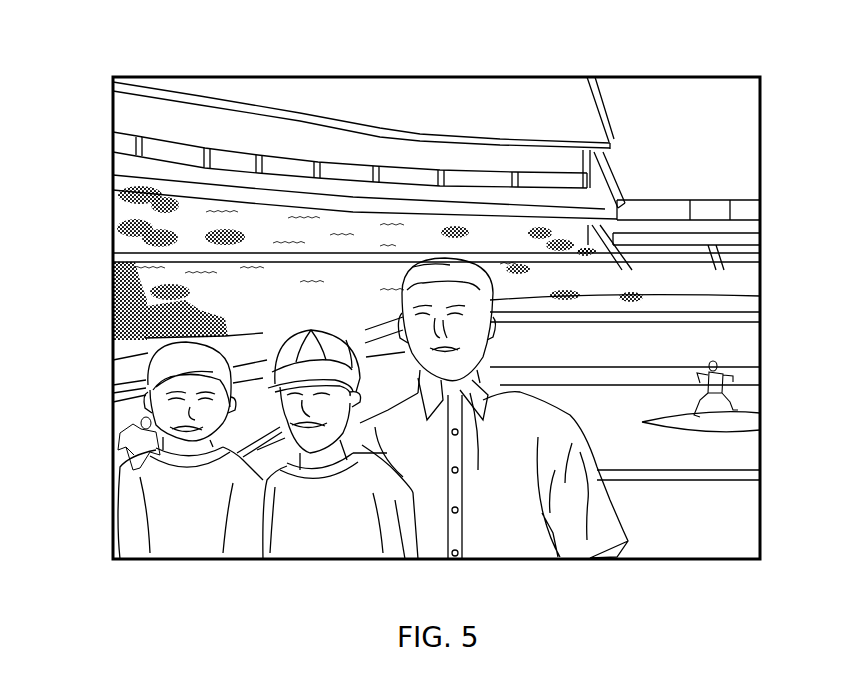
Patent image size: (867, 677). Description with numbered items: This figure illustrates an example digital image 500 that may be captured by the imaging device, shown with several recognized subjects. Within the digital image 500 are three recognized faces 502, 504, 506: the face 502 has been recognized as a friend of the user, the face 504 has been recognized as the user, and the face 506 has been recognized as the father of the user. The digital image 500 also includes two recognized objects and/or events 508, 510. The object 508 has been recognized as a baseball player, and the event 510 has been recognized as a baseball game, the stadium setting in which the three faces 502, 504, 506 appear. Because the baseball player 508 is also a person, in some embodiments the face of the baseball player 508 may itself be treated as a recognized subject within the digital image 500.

The digital image 500 is at (760, 172).
The face 502 is at (138, 373).
The face 504 is at (320, 320).
The face 506 is at (400, 308).
The object 508 is at (737, 360).
The event 510 is at (320, 155).